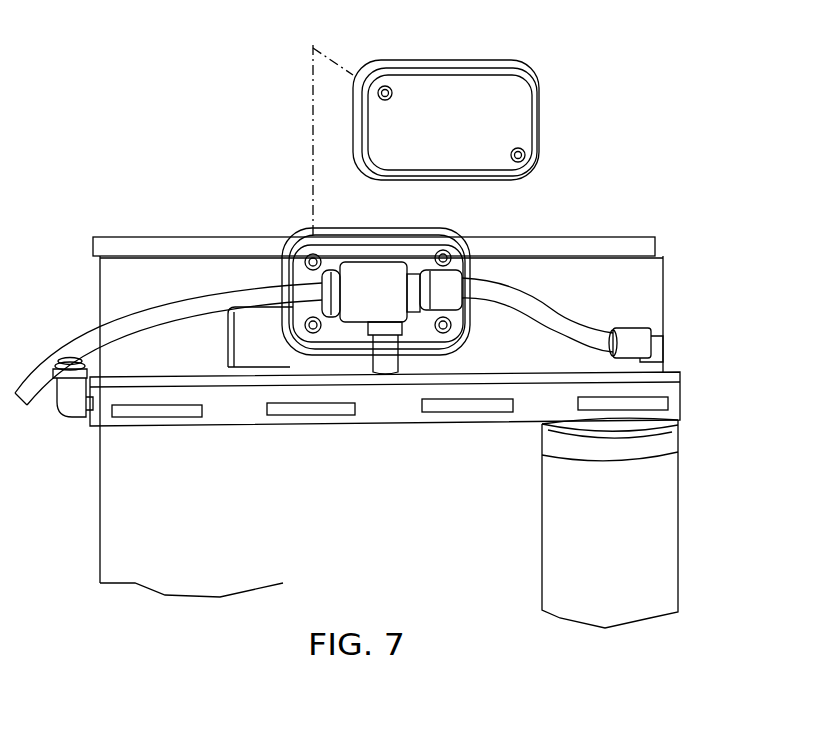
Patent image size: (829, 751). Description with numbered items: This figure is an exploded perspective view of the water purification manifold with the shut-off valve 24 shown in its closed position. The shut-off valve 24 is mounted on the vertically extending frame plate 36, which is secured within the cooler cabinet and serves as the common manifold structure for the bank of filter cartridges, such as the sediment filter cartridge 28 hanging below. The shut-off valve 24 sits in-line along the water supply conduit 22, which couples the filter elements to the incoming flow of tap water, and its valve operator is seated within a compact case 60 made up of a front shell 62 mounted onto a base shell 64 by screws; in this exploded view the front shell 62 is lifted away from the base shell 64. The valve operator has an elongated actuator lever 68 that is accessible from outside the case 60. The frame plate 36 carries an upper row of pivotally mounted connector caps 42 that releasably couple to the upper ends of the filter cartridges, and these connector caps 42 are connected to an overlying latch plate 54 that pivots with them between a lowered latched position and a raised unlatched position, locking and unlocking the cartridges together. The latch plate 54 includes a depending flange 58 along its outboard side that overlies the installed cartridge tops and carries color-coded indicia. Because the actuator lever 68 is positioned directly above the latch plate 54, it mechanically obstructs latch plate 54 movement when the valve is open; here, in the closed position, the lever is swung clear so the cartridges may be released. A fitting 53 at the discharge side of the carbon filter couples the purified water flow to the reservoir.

The water supply conduit 22 is at (182, 293).
The shut-off valve 24 is at (575, 198).
The sediment filter cartridge 28 is at (675, 443).
The frame plate 36 is at (118, 478).
The connector caps 42 is at (268, 428).
The fitting 53 is at (68, 358).
The latch plate 54 is at (474, 372).
The depending flange 58 is at (405, 407).
The case 60 is at (530, 68).
The front shell 62 is at (437, 80).
The base shell 64 is at (467, 248).
The actuator lever 68 is at (245, 333).